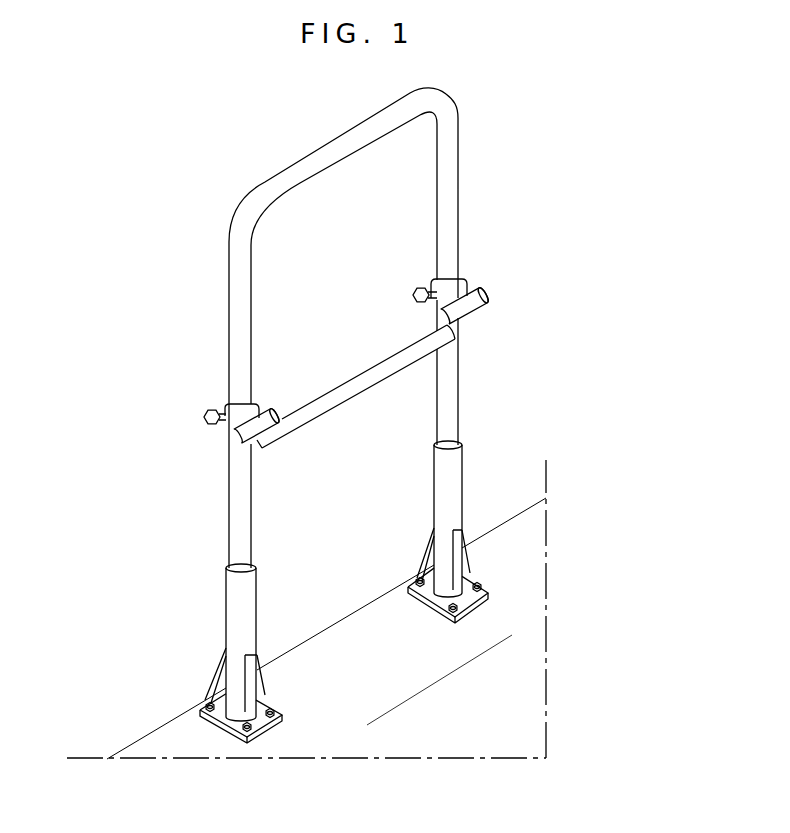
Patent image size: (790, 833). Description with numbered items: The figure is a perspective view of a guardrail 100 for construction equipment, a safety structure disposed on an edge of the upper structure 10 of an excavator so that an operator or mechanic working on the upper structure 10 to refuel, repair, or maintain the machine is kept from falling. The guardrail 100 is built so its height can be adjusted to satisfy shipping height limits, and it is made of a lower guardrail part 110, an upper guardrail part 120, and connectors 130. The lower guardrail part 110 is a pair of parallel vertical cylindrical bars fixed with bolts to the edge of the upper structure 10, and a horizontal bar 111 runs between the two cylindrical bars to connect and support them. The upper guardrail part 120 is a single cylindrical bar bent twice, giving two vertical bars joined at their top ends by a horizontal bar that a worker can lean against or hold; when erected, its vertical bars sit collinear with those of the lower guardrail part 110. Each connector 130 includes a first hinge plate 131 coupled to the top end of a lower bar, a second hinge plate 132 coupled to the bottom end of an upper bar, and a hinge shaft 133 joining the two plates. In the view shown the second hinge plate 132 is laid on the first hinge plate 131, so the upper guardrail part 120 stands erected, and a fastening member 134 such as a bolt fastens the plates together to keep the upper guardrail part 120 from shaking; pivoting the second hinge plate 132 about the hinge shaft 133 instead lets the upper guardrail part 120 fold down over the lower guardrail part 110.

The guardrail for construction equipment 100 is at (370, 415).
The upper structure 10 is at (526, 616).
The lower guardrail part 110 is at (459, 407).
The horizontal bar 111 is at (333, 392).
The upper guardrail part 120 is at (328, 150).
The connector 130 is at (520, 290).
The first hinge plate 131 is at (511, 335).
The second hinge plate 132 is at (458, 290).
The hinge shaft 133 is at (486, 301).
The fastening member 134 is at (428, 282).